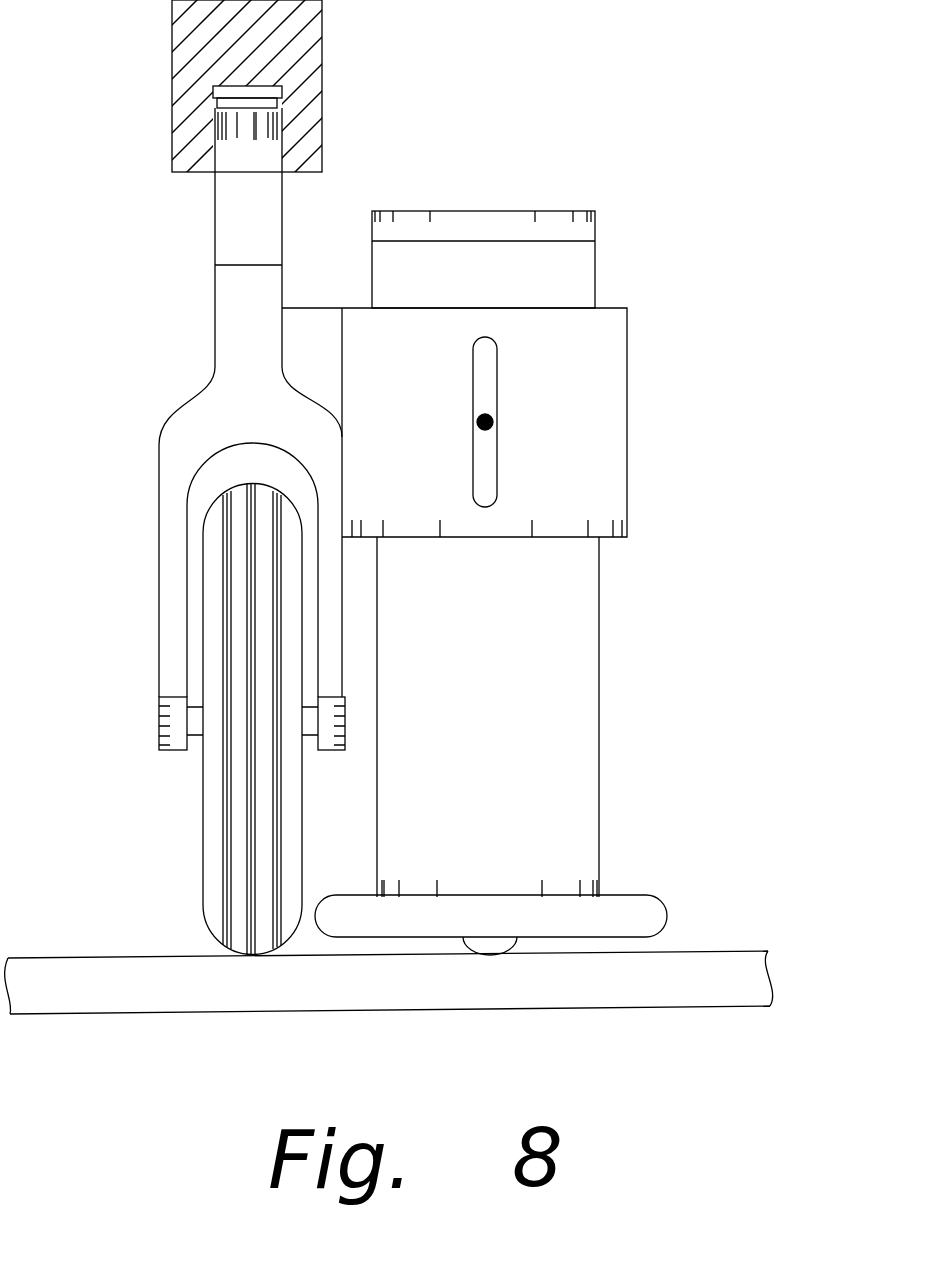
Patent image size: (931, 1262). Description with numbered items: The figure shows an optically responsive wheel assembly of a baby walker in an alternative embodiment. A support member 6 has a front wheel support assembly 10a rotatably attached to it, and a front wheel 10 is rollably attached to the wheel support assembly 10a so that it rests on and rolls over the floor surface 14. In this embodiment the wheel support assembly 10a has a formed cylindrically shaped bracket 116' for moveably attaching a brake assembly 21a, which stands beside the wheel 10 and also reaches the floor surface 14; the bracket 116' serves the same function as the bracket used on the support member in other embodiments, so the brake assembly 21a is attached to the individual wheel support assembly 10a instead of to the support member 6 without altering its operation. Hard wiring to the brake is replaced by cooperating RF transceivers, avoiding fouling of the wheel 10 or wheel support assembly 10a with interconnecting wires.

The support member 6 is at (170, 43).
The front wheel support assembly 10a is at (215, 245).
The front wheel 10 is at (203, 873).
The cylindrically shaped bracket 116' is at (521, 374).
The brake assembly 21a is at (636, 694).
The floor surface 14 is at (110, 955).